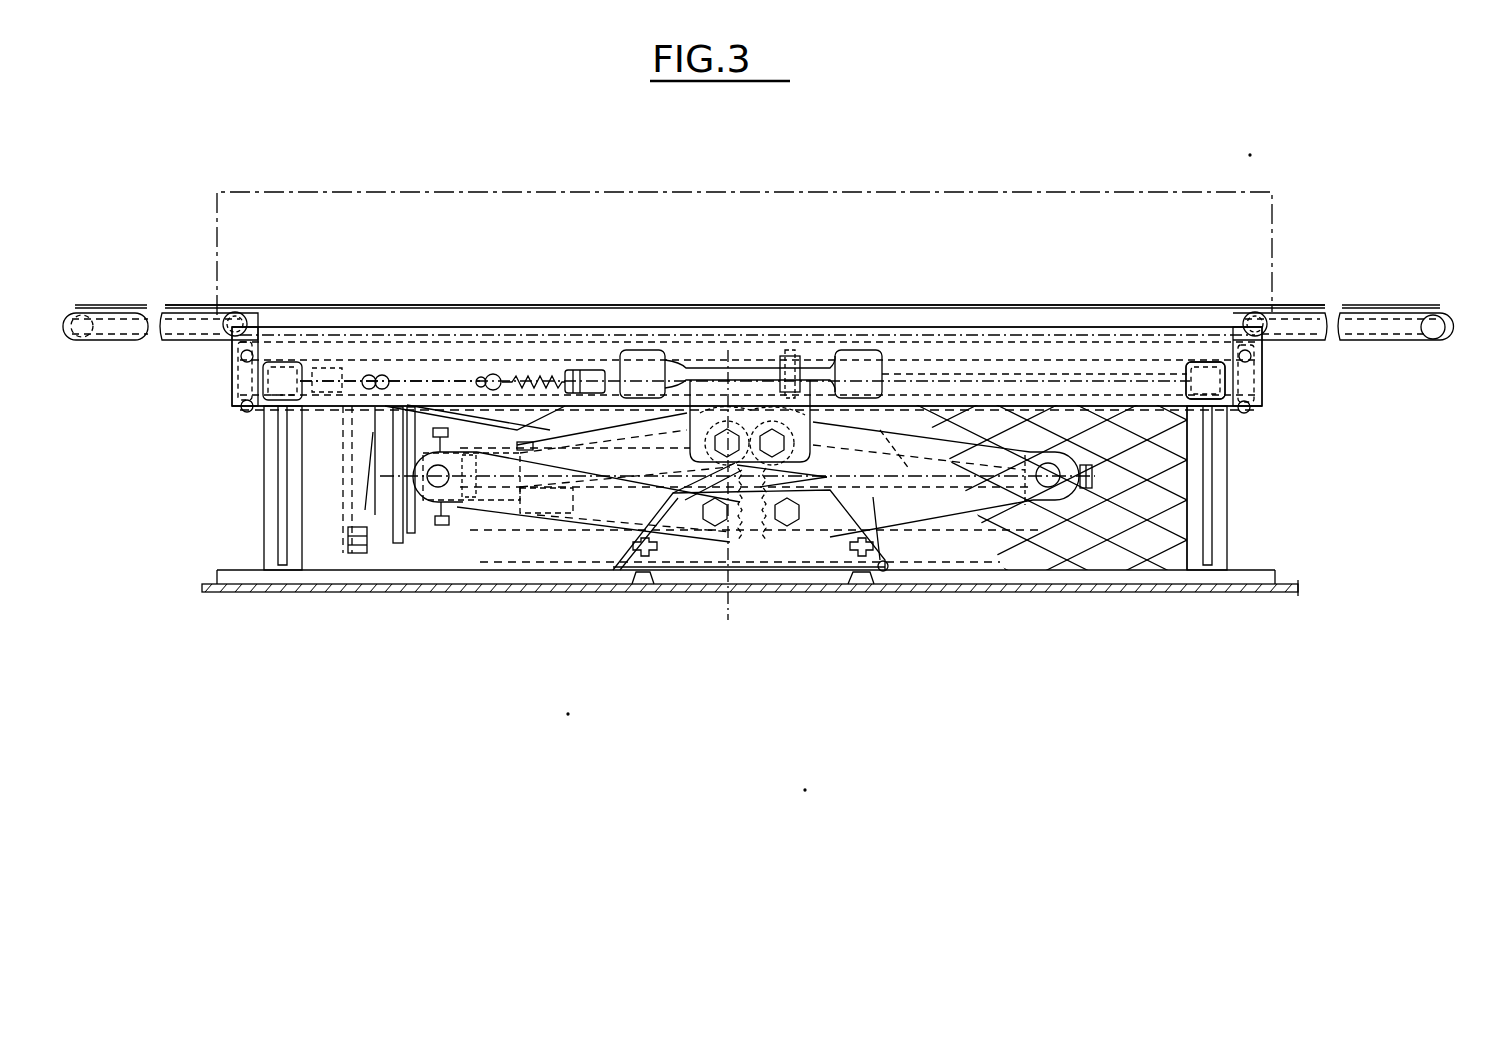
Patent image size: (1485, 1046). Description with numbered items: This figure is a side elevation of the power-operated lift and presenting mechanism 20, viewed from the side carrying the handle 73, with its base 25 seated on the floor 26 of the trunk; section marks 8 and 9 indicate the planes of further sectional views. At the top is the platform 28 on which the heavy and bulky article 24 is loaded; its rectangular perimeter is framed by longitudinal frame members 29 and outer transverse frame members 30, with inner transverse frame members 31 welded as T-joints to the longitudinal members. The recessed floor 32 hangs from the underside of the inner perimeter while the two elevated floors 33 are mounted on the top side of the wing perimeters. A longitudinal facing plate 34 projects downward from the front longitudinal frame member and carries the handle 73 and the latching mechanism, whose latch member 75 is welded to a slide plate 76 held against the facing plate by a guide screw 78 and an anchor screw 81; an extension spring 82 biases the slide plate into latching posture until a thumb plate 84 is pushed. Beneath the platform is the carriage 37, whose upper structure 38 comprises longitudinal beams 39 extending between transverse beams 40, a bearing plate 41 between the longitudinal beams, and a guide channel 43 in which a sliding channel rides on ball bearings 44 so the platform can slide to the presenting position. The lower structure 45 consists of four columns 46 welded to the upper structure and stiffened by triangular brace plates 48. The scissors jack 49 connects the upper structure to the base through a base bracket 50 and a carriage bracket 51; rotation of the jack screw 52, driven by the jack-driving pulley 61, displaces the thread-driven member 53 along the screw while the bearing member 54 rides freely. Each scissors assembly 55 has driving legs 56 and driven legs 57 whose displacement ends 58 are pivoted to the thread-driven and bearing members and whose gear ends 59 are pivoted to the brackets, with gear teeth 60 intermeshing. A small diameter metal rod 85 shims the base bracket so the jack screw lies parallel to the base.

The section line 8 is at (288, 382).
The section line 9 is at (728, 367).
The power-operated lift and presenting mechanism 20 is at (1288, 254).
The heavy and bulky article 24 is at (1020, 191).
The base 25 is at (968, 577).
The floor 26 is at (1050, 588).
The platform 28 is at (648, 304).
The longitudinal frame members 29 is at (150, 332).
The outer transverse frame members 30 is at (62, 330).
The inner transverse frame members 31 is at (218, 340).
The recessed floor 32 is at (410, 333).
The elevated floors 33 is at (150, 305).
The longitudinal facing plate 34 is at (952, 398).
The carriage 37 is at (1263, 432).
The upper structure 38 is at (1270, 398).
The longitudinal beams 39 is at (1112, 378).
The transverse beams 40 is at (1205, 360).
The bearing plate 41 is at (752, 366).
The guide channel 43 is at (250, 408).
The ball bearings 44 is at (240, 408).
The lower structure 45 is at (1230, 481).
The columns 46 is at (268, 513).
The triangular brace plates 48 is at (325, 530).
The scissors jack 49 is at (478, 521).
The base bracket 50 is at (625, 556).
The carriage bracket 51 is at (870, 428).
The jack screw 52 is at (907, 470).
The thread-driven member 53 is at (1047, 490).
The bearing member 54 is at (467, 470).
The scissors assemblies 55 is at (889, 500).
The driving legs 56 is at (867, 500).
The driven legs 57 is at (596, 445).
The displacement end 58 is at (440, 497).
The gear end 59 is at (700, 438).
The gear teeth 60 is at (723, 478).
The jack-driving pulley 61 is at (346, 436).
The handle 73 is at (826, 368).
The latch member 75 is at (330, 372).
The slide plate 76 is at (463, 368).
The guide screw 78 is at (389, 382).
The anchor screw 81 is at (495, 375).
The extension spring 82 is at (540, 365).
The thumb plate 84 is at (588, 372).
The small diameter metal rod 85 is at (888, 563).